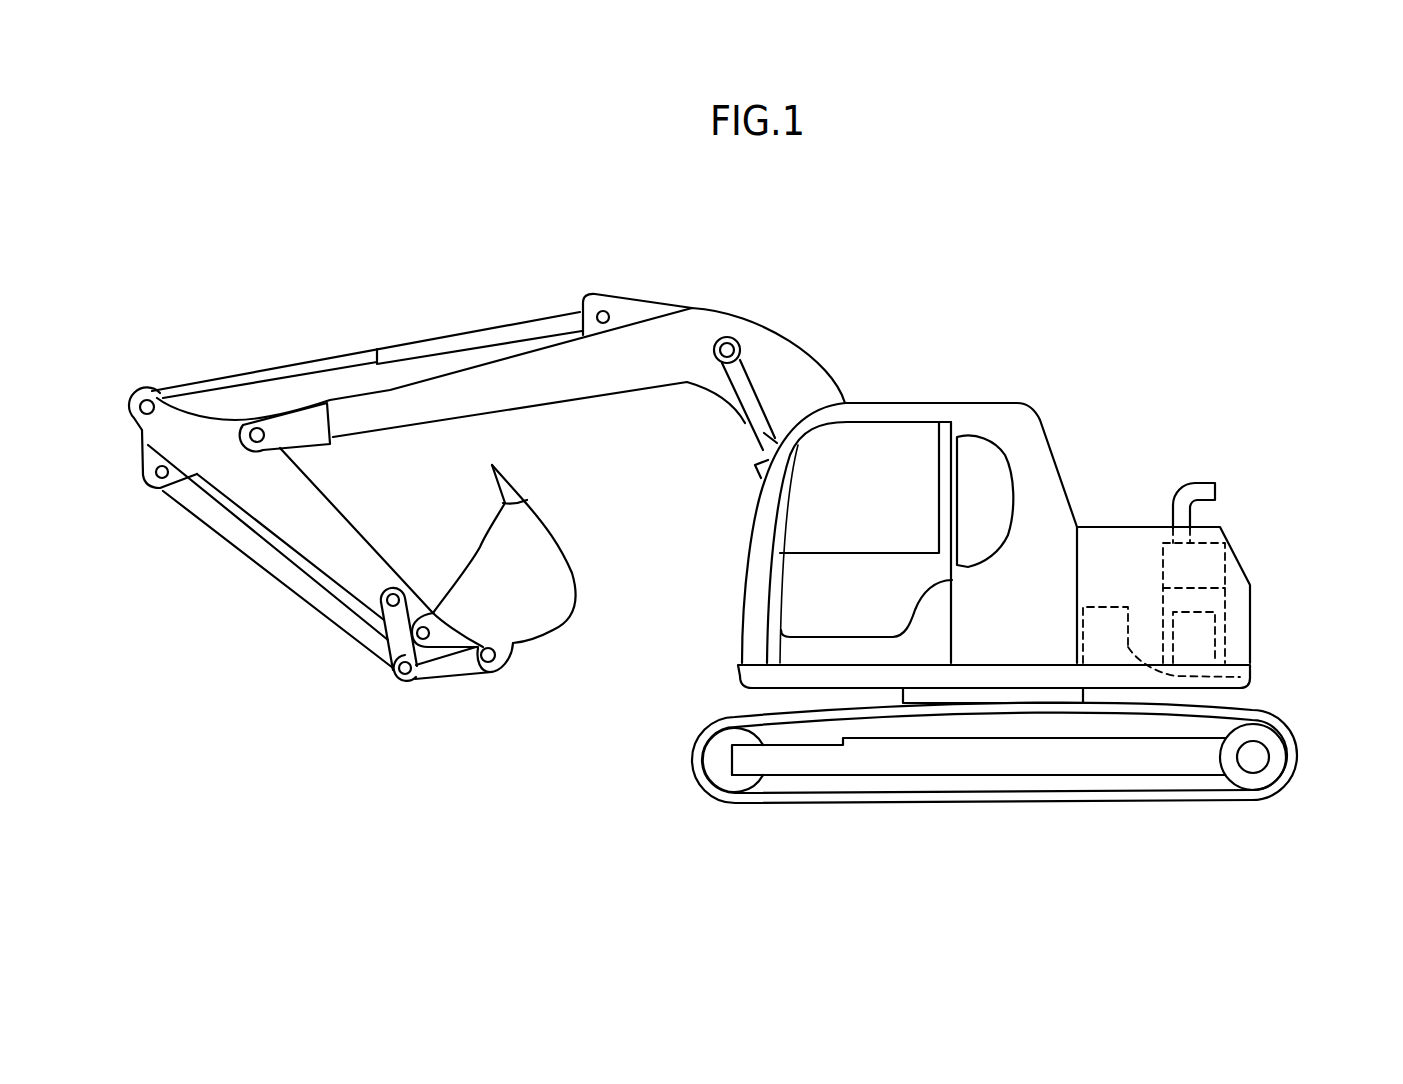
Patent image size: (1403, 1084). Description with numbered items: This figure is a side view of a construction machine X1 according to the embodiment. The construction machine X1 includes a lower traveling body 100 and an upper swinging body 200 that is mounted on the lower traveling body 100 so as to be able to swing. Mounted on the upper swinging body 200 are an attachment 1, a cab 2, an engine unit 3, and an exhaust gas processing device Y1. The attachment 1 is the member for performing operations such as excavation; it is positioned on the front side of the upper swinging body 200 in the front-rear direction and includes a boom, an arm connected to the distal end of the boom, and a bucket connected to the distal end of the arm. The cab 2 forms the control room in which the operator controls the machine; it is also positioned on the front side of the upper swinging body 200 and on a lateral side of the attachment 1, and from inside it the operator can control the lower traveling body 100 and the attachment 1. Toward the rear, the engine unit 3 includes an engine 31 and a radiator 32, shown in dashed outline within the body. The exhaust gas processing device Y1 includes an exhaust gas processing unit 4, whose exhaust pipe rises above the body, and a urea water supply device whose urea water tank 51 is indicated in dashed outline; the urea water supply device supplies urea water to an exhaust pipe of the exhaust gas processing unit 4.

The attachment 1 is at (475, 380).
The cab 2 is at (973, 410).
The upper swinging body 200 is at (1147, 417).
The construction machine X1 is at (993, 237).
The exhaust gas processing device Y1 is at (1250, 507).
The exhaust gas processing unit 4 is at (1226, 562).
The engine unit 3 is at (1261, 625).
The engine 31 is at (1226, 600).
The radiator 32 is at (1217, 636).
The urea water tank 51 is at (1240, 677).
The lower traveling body 100 is at (887, 812).